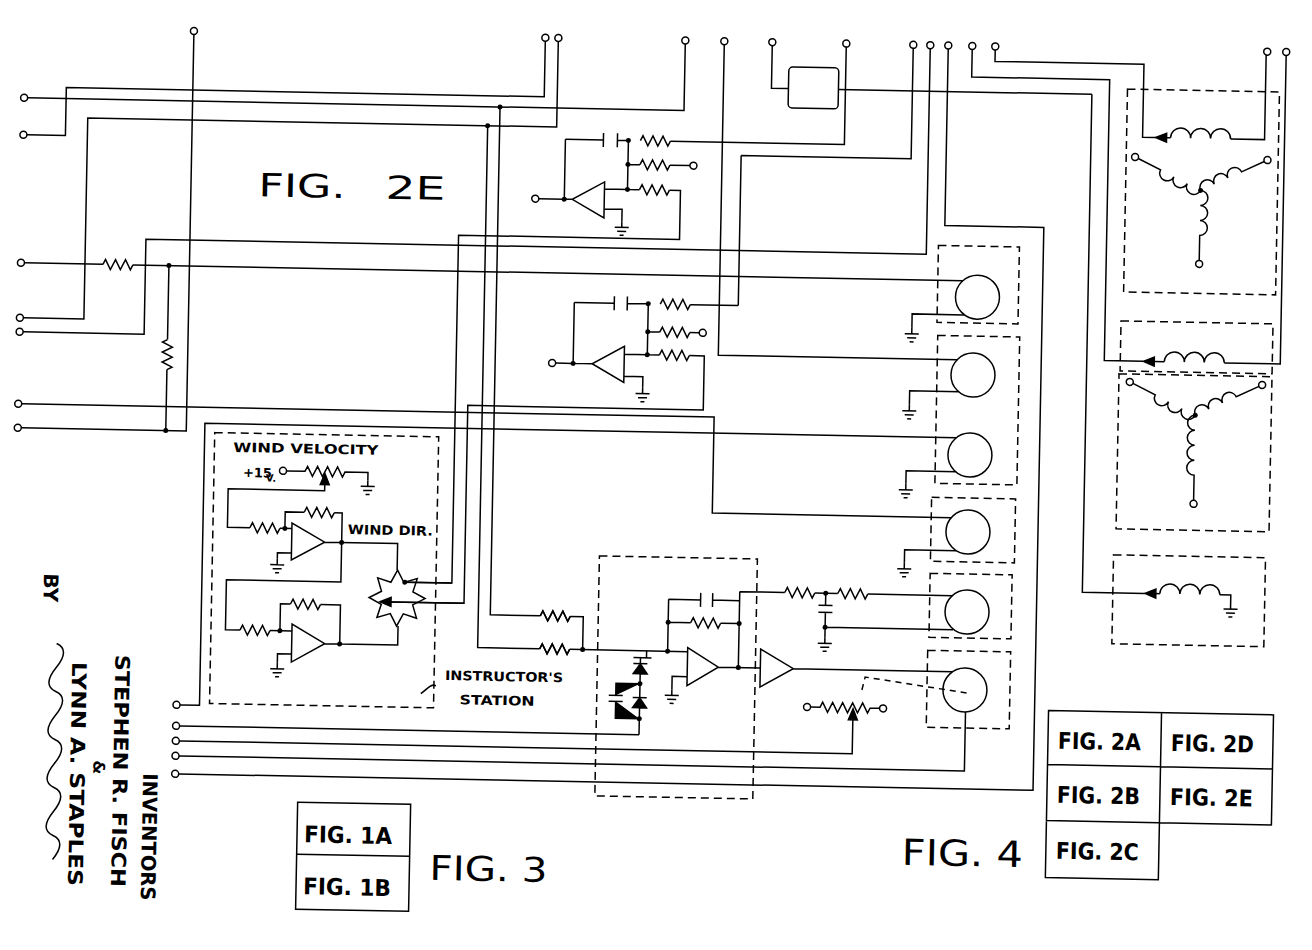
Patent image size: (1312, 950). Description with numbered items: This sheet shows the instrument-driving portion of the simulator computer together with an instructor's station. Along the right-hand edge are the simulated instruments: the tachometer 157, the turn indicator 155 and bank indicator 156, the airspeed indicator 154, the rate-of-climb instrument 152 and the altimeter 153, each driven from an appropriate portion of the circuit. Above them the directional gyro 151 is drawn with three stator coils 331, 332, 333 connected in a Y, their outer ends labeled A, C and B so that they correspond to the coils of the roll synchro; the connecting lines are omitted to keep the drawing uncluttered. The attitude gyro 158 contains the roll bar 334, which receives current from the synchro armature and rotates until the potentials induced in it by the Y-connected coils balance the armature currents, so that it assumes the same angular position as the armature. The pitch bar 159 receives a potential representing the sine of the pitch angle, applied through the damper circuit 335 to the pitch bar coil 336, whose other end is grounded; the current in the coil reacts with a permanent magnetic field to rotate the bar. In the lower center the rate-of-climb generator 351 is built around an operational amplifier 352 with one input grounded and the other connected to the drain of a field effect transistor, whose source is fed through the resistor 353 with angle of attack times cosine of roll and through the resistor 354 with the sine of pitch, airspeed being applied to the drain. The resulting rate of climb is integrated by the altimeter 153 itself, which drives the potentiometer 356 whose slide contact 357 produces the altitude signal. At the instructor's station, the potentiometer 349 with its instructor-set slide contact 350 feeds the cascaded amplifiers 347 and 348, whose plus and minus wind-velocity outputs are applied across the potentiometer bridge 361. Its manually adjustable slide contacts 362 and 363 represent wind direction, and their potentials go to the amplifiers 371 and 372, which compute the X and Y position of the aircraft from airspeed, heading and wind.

The damper circuit 335 is at (822, 65).
The amplifier 371 is at (585, 209).
The amplifier 372 is at (603, 377).
The potentiometer 349 is at (352, 478).
The slide contact 350 is at (330, 485).
The amplifier 347 is at (293, 552).
The amplifier 348 is at (312, 660).
The potentiometer bridge 361 is at (389, 580).
The slide contact 362 is at (400, 630).
The slide contact 363 is at (408, 583).
The resistor 353 is at (547, 615).
The resistor 354 is at (542, 651).
The rate-of-climb generator 351 is at (651, 573).
The operational amplifier 352 is at (696, 677).
The potentiometer 356 is at (850, 699).
The slide contact 357 is at (860, 714).
The tachometer 157 is at (953, 279).
The turn indicator 155 is at (952, 361).
The bank indicator 156 is at (948, 449).
The airspeed indicator 154 is at (950, 530).
The rate-of-climb instrument 152 is at (947, 611).
The altimeter 153 is at (966, 706).
The directional gyro 151 is at (1166, 273).
The roll bar 334 is at (1196, 347).
The stator coil 331 is at (1176, 392).
The stator coil 332 is at (1206, 390).
The stator coil 333 is at (1188, 446).
The attitude gyro 158 is at (1193, 470).
The pitch bar coil 336 is at (1197, 584).
The pitch bar 159 is at (1188, 613).